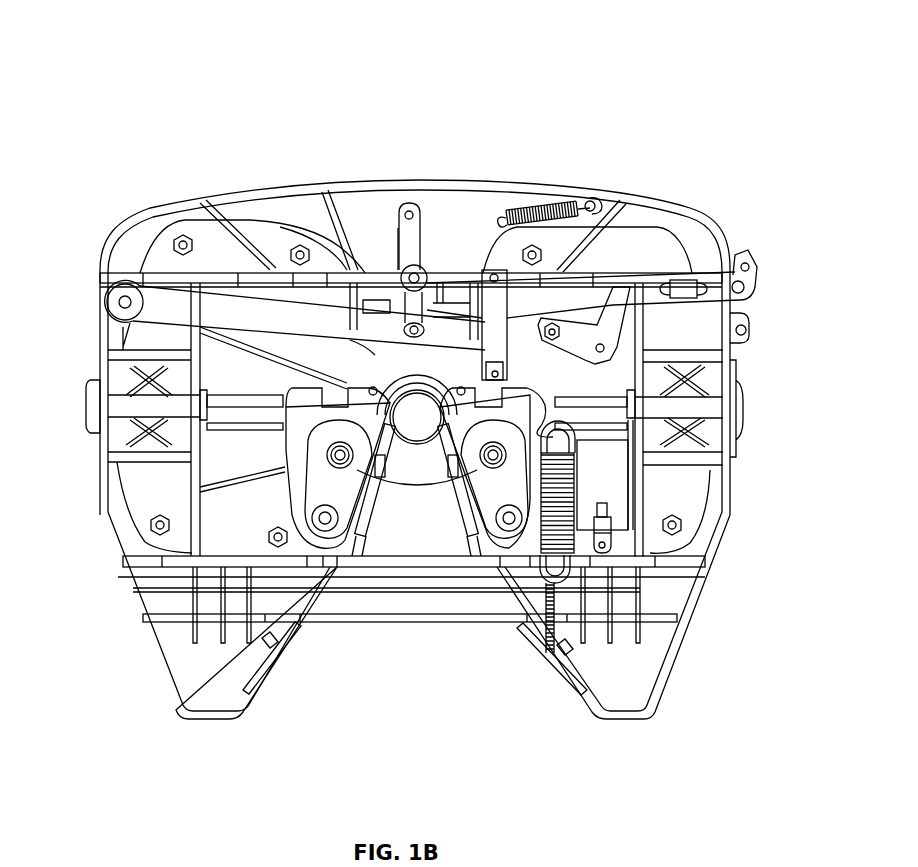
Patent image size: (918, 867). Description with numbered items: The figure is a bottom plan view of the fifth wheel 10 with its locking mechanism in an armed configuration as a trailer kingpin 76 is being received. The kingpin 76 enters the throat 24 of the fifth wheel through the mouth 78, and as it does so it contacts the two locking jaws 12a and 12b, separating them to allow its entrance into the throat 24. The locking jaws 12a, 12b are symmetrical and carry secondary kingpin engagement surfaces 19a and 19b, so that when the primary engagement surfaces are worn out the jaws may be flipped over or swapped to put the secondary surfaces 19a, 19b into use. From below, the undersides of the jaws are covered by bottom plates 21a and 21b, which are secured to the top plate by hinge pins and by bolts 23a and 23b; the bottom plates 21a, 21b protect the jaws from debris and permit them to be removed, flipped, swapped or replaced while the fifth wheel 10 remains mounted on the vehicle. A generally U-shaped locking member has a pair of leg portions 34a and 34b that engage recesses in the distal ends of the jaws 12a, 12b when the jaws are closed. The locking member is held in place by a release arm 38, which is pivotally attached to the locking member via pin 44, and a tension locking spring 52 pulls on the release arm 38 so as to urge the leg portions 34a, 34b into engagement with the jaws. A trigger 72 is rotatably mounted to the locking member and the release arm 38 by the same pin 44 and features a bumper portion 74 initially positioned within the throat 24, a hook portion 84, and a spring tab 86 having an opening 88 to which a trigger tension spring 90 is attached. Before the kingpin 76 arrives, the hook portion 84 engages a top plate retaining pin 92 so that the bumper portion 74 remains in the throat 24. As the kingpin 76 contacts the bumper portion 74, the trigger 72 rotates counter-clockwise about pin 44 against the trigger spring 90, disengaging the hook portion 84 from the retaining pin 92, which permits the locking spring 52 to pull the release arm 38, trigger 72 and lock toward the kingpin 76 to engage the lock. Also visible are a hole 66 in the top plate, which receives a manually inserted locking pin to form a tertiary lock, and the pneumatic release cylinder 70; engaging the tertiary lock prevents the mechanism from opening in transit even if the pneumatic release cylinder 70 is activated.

The fifth wheel 10 is at (175, 50).
The release arm 38 is at (223, 310).
The hook portion 84 is at (338, 262).
The trigger 72 is at (384, 246).
The spring tab 86 is at (397, 228).
The opening 88 is at (413, 203).
The top plate retaining pin 92 is at (440, 275).
The pin 44 is at (412, 266).
The trigger tension spring 90 is at (540, 207).
The hole 66 is at (752, 330).
The leg portion 34a is at (375, 333).
The throat 24 is at (365, 368).
The leg portion 34b is at (470, 346).
The secondary kingpin engagement surface 19a is at (287, 392).
The secondary kingpin engagement surface 19b is at (555, 430).
The bumper portion 74 is at (412, 377).
The kingpin 76 is at (406, 429).
The mouth 78 is at (412, 550).
The locking jaw 12a is at (360, 472).
The locking jaw 12b is at (474, 472).
The bolt 23a is at (360, 547).
The bolt 23b is at (472, 547).
The bottom plate 21a is at (330, 570).
The bottom plate 21b is at (503, 570).
The pneumatic release cylinder 70 is at (596, 471).
The tension locking spring 52 is at (590, 490).